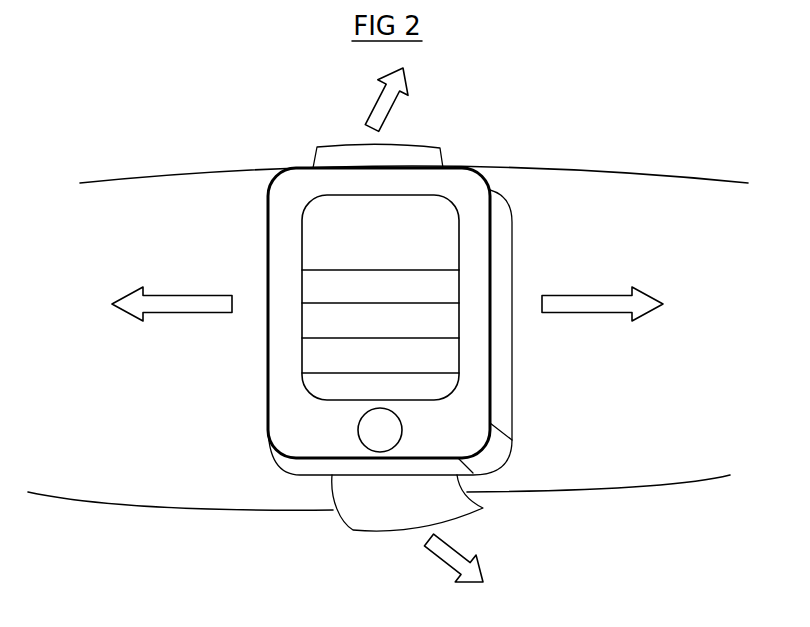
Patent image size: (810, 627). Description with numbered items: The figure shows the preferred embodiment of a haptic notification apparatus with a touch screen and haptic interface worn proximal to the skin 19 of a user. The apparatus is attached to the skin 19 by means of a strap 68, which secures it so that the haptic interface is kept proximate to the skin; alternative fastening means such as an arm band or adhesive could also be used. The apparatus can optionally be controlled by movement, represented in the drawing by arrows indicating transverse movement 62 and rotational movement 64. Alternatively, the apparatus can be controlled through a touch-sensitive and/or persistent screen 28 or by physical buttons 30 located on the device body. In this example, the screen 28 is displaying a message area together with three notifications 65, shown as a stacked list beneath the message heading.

The skin 19 is at (132, 212).
The screen 28 is at (440, 218).
The physical buttons 30 is at (387, 440).
The transverse movement 62 is at (166, 295).
The rotational movement 64 is at (372, 113).
The notifications 65 is at (302, 338).
The strap 68 is at (333, 495).